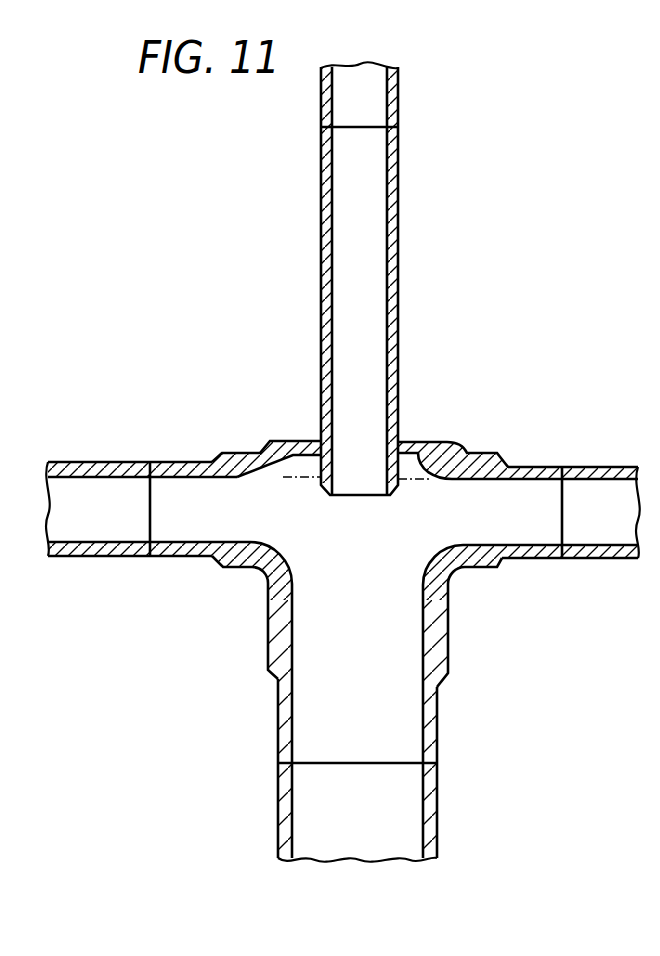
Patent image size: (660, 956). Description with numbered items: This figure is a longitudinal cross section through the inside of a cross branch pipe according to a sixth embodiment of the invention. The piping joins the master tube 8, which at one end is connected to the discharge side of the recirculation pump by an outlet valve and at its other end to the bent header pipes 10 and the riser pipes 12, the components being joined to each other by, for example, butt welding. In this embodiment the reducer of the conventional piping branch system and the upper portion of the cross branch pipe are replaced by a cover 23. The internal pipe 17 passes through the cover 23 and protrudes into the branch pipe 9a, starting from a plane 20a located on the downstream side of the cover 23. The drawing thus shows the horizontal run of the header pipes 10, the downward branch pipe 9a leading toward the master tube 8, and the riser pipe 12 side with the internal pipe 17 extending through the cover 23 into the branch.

The master tube 8 is at (430, 810).
The branch pipe 9a is at (438, 660).
The bent header pipes 10 is at (97, 548).
The riser pipes 12 is at (397, 100).
The internal pipe 17 is at (396, 378).
The plane 20a is at (310, 480).
The cover 23 is at (302, 447).